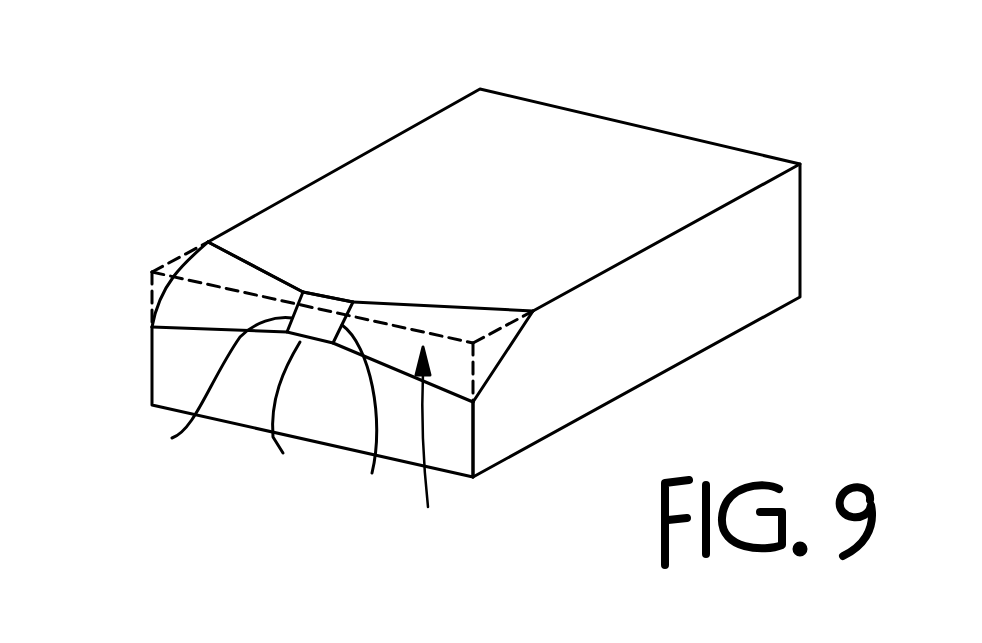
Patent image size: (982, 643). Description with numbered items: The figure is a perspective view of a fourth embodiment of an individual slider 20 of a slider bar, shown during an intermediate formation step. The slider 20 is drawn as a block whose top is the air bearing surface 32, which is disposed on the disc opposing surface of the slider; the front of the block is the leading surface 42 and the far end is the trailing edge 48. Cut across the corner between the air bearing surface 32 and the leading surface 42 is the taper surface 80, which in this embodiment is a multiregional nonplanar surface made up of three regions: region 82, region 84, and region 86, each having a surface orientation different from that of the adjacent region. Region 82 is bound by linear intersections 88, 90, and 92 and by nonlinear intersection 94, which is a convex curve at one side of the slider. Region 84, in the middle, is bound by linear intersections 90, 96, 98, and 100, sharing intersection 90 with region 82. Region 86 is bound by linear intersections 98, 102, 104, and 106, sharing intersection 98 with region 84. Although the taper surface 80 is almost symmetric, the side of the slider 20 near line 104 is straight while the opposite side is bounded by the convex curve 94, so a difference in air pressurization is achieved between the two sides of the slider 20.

The slider 20 is at (713, 101).
The air bearing surface 32 is at (547, 122).
The trailing edge 48 is at (765, 153).
The leading surface 42 is at (237, 405).
The taper surface 80 is at (428, 454).
The region 82 is at (218, 288).
The region 84 is at (322, 325).
The region 86 is at (487, 351).
The linear intersection 88 is at (277, 273).
The linear intersection 90 is at (172, 438).
The linear intersection 92 is at (178, 330).
The nonlinear intersection 94 is at (168, 282).
The linear intersection 96 is at (355, 300).
The linear intersection 98 is at (362, 424).
The linear intersection 100 is at (288, 420).
The linear intersection 102 is at (495, 307).
The linear intersection 104 is at (533, 320).
The linear intersection 106 is at (468, 402).